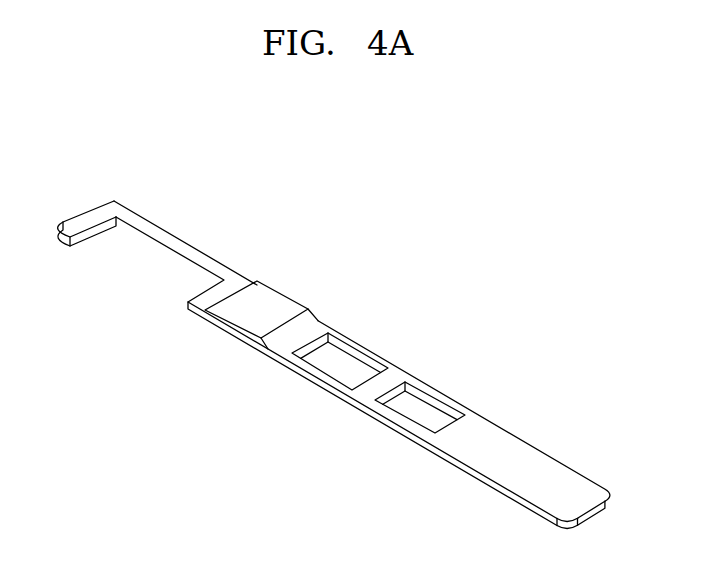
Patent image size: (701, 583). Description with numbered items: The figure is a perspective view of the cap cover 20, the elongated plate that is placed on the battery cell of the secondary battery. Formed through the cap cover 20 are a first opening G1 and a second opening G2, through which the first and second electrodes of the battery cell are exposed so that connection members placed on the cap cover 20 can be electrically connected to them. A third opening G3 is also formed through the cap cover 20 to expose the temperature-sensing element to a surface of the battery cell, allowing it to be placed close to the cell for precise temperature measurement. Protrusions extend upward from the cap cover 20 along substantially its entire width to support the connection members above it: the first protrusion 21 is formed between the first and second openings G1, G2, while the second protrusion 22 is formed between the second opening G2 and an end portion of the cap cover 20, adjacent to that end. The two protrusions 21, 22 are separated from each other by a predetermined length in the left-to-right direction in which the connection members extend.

The cap cover 20 is at (570, 493).
The first protrusion 21 is at (278, 298).
The second protrusion 22 is at (83, 212).
The first opening G1 is at (335, 368).
The second opening G2 is at (148, 265).
The third opening G3 is at (415, 413).